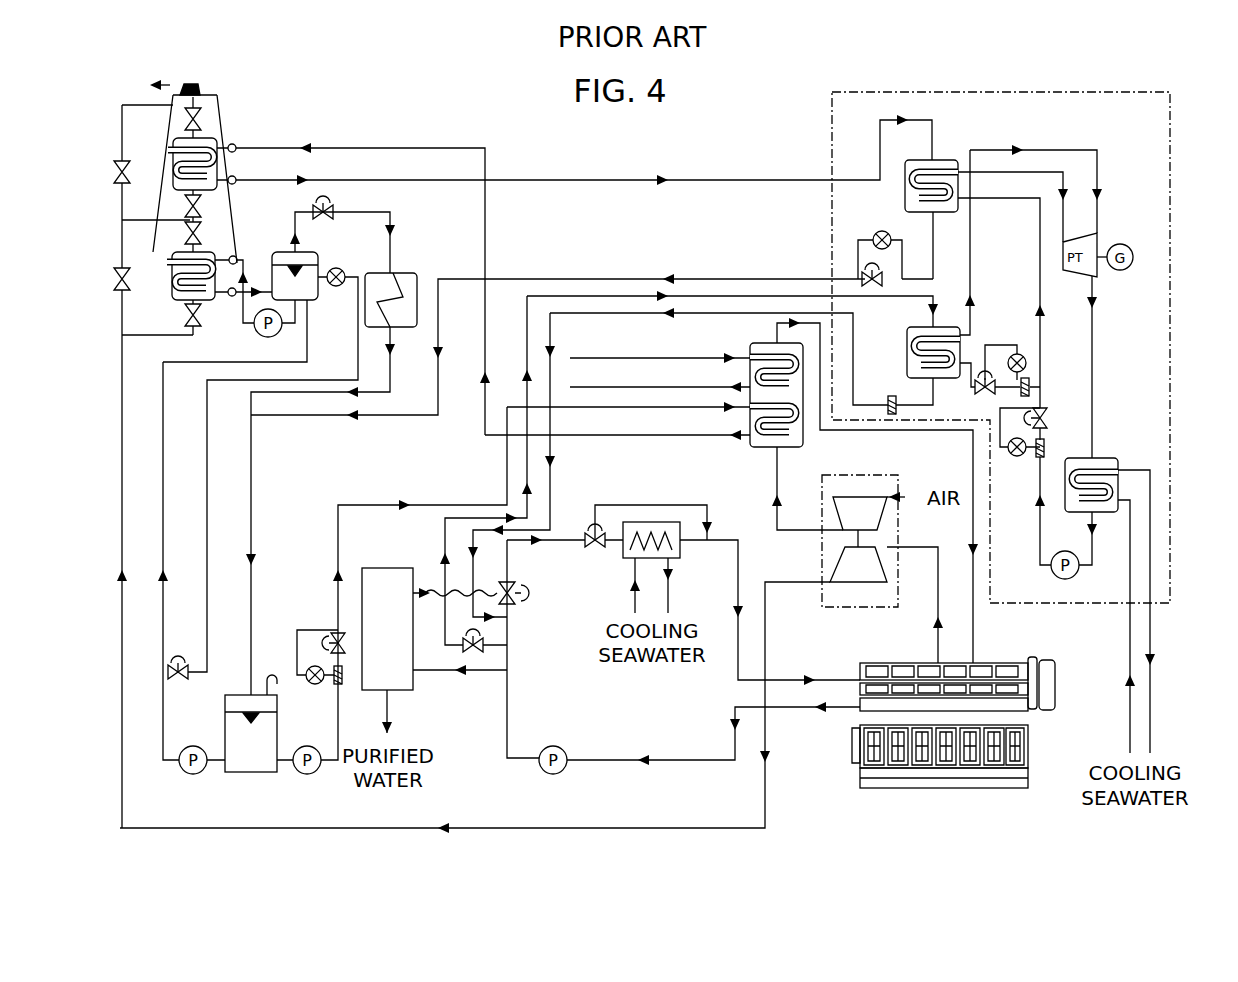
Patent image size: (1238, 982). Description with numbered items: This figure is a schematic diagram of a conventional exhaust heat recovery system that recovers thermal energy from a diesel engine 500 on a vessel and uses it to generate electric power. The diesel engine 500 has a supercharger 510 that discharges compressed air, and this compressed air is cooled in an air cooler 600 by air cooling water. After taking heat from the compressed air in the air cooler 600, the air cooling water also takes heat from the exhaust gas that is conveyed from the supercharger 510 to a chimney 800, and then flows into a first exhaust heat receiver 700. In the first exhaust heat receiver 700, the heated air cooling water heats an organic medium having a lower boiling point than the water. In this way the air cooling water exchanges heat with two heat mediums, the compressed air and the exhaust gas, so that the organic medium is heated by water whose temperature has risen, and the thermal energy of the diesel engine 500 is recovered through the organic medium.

The diesel engine 500 is at (942, 788).
The supercharger 510 is at (835, 608).
The air cooler 600 is at (760, 447).
The first exhaust heat receiver 700 is at (948, 158).
The chimney 800 is at (219, 117).